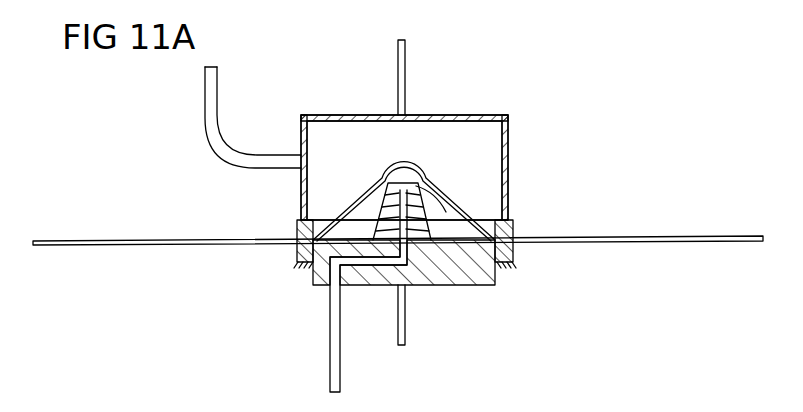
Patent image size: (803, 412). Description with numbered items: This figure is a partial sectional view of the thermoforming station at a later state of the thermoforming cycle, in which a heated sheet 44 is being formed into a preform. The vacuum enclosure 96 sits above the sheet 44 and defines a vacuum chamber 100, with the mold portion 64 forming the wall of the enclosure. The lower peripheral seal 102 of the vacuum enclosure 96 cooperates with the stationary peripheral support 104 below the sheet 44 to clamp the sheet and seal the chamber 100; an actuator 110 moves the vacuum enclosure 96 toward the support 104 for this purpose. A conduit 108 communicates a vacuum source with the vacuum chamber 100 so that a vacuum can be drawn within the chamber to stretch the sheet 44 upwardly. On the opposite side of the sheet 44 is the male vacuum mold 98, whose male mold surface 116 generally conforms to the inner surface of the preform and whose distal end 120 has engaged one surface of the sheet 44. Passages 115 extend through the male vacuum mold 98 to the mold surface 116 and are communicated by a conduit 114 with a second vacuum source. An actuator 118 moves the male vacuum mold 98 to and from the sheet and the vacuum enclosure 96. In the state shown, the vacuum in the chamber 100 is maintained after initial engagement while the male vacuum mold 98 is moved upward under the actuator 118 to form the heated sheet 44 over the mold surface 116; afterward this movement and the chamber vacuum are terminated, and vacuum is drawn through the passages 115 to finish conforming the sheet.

The sheet 44 is at (190, 248).
The mold portion 64 is at (508, 110).
The vacuum enclosure 96 is at (508, 82).
The male vacuum mold 98 is at (312, 287).
The vacuum chamber 100 is at (315, 117).
The lower peripheral seal 102 is at (297, 232).
The stationary peripheral support 104 is at (295, 262).
The conduit 108 is at (205, 97).
The actuator 110 is at (398, 62).
The conduit 114 is at (330, 340).
The passages 115 is at (421, 205).
The male mold surface 116 is at (430, 214).
The actuator 118 is at (405, 318).
The distal end 120 is at (394, 172).